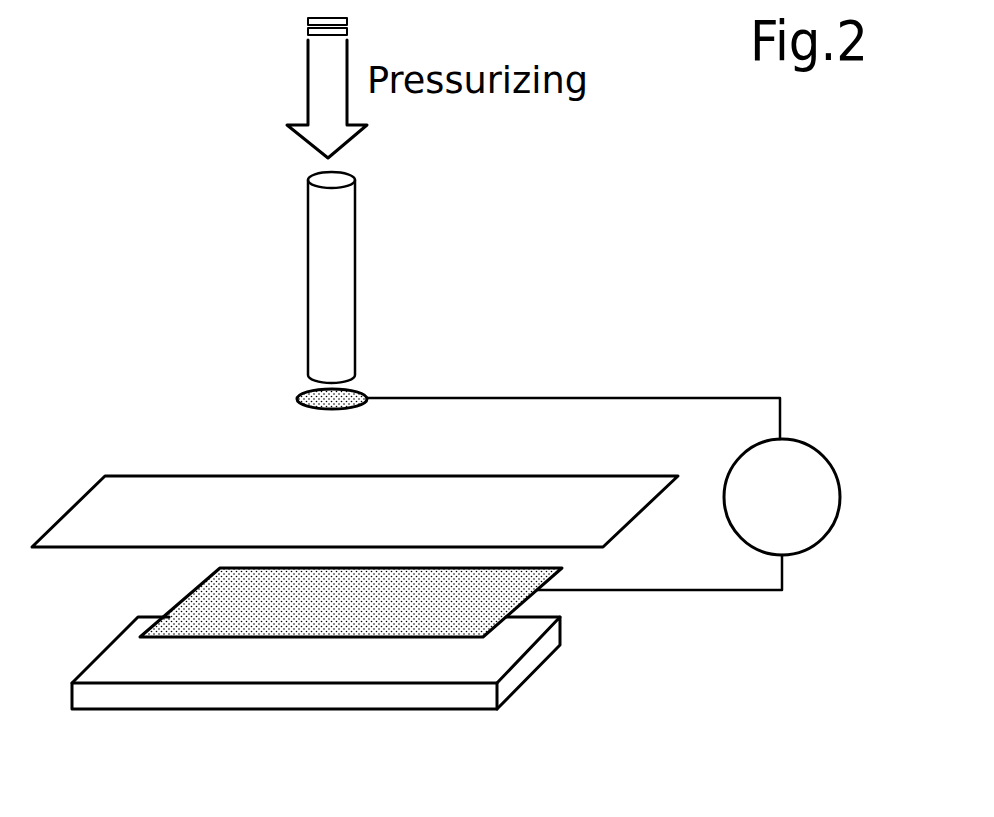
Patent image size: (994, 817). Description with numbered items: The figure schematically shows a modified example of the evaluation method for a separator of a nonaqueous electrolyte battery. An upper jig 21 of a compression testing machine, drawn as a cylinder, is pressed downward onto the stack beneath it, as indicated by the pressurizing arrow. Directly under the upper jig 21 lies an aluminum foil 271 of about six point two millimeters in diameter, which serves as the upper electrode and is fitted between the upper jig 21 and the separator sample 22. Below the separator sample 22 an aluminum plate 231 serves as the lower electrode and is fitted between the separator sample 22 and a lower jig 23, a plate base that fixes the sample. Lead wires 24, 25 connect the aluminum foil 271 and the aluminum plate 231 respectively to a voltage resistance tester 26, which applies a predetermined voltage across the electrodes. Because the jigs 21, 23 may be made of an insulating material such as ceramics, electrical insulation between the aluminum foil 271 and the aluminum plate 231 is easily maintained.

The upper jig 21 is at (325, 278).
The aluminum foil 271 is at (297, 400).
The separator sample 22 is at (117, 485).
The aluminum plate 231 is at (187, 605).
The lower jig 23 is at (427, 692).
The lead wire 24 is at (707, 396).
The lead wire 25 is at (699, 593).
The voltage resistance tester 26 is at (830, 462).